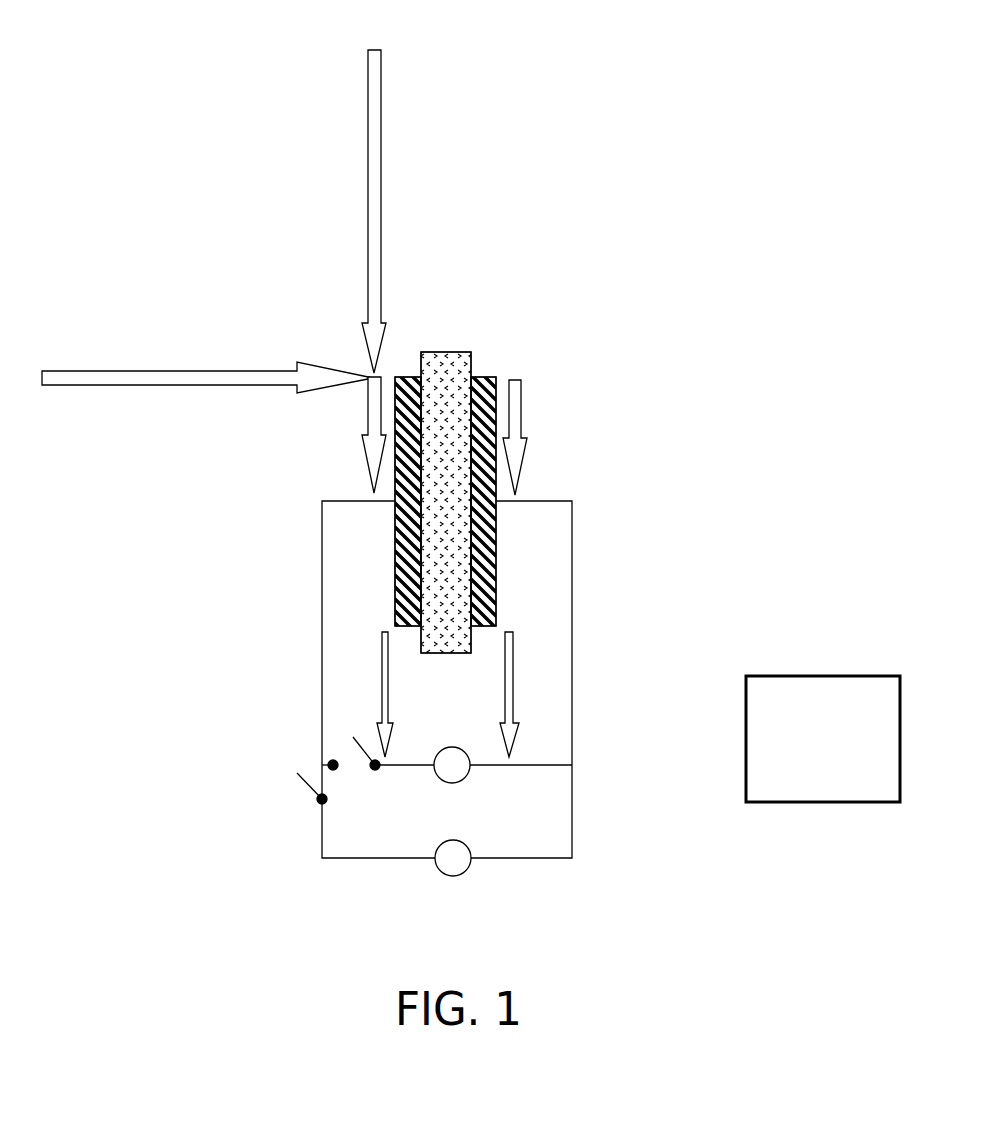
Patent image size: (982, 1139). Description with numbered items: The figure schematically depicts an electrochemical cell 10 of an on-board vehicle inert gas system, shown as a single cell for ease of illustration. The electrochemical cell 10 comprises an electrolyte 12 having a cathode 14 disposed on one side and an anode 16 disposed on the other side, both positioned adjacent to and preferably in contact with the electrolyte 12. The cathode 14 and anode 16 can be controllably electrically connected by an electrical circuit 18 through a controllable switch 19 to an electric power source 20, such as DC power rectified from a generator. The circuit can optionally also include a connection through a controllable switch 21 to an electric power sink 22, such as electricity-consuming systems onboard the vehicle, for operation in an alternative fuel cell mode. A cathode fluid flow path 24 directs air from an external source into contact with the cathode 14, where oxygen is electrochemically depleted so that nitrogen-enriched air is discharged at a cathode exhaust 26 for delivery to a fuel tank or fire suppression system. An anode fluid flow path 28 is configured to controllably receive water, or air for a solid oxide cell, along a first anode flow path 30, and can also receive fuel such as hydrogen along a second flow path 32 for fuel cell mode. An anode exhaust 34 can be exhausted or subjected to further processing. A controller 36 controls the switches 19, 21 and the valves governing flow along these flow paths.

The electrochemical cell 10 is at (742, 250).
The electrolyte 12 is at (446, 352).
The cathode 14 is at (485, 626).
The anode 16 is at (408, 626).
The electrical circuit 18 is at (545, 502).
The controllable switch 19 is at (375, 770).
The electric power source 20 is at (457, 788).
The controllable switch 21 is at (317, 798).
The electric power sink 22 is at (470, 873).
The cathode fluid flow path 24 is at (523, 413).
The cathode exhaust 26 is at (513, 697).
The anode fluid flow path 28 is at (368, 412).
The first anode flow path 30 is at (163, 386).
The second flow path 32 is at (370, 82).
The anode exhaust 34 is at (381, 687).
The controller 36 is at (853, 802).